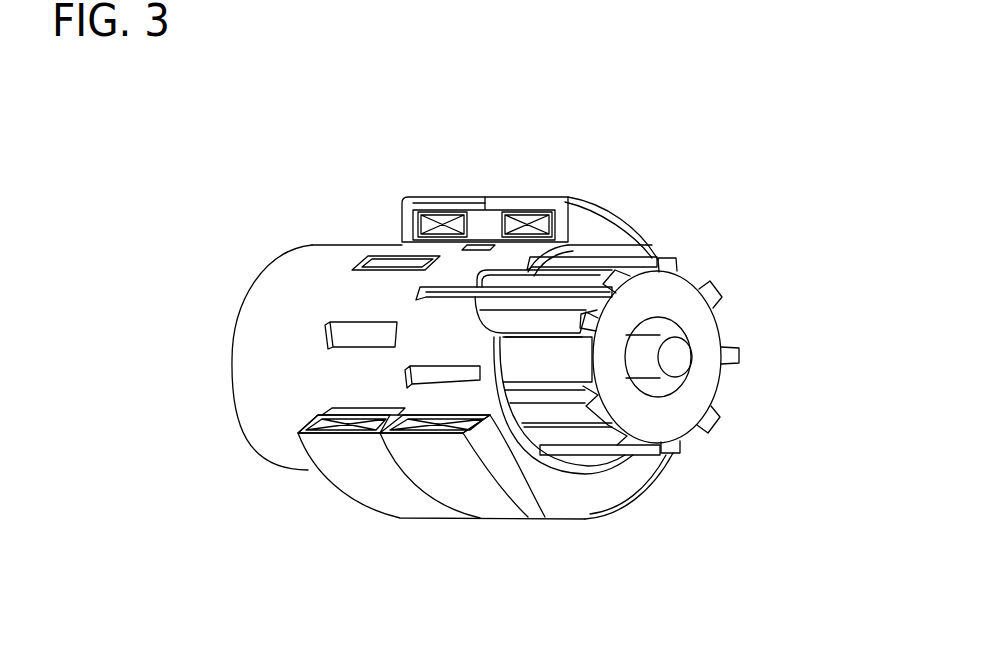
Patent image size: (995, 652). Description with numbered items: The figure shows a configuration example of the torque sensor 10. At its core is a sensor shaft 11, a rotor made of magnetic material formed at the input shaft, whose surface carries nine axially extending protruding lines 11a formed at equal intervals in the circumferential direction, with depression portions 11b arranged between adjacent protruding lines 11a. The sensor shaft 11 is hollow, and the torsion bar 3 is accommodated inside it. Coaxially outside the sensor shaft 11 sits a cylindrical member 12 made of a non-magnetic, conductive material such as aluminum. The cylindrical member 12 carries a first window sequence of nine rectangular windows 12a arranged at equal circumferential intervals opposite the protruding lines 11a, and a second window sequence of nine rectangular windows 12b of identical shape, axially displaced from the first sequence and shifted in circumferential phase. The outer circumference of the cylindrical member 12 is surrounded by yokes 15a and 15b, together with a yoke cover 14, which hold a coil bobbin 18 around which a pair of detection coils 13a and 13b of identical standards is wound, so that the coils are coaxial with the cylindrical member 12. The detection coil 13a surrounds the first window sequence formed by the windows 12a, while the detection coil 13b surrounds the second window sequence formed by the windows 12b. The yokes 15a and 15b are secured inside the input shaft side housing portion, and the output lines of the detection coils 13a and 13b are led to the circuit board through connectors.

The torque sensor 10 is at (750, 136).
The cylindrical member 12 is at (305, 258).
The rectangular windows 12a is at (383, 270).
The rectangular windows 12b is at (440, 305).
The yoke cover 14 is at (490, 222).
The detection coil 13a is at (443, 218).
The detection coil 13b is at (528, 220).
The yoke 15a is at (468, 208).
The yoke 15b is at (550, 198).
The coil bobbin 18 is at (413, 227).
The torsion bar 3 is at (678, 353).
The sensor shaft (rotor) 11 is at (698, 385).
The protruding lines 11a is at (666, 262).
The depression portions 11b is at (704, 270).